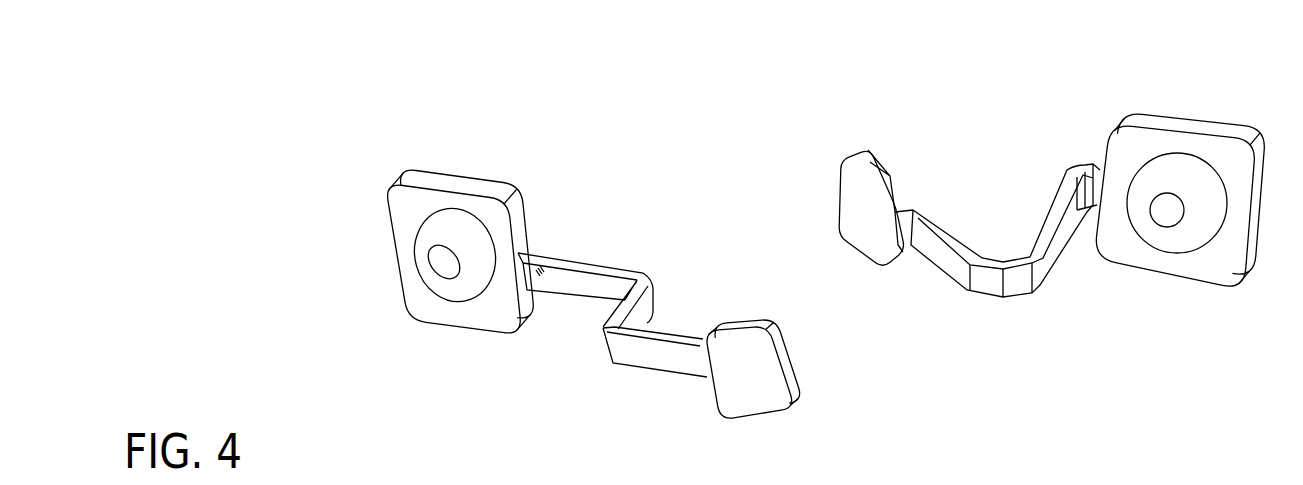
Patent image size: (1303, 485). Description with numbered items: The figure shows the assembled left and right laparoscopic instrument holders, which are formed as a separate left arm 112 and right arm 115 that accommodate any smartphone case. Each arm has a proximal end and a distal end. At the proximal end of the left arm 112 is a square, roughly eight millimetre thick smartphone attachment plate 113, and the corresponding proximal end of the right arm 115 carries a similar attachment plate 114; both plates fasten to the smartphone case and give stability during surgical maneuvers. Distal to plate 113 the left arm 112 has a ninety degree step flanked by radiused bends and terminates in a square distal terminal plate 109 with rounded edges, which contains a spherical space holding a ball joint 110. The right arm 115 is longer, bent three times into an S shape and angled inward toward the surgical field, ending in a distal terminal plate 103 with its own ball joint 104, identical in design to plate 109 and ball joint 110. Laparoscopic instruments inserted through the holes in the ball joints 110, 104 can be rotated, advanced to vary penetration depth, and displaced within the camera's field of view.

The distal terminal plate 103 is at (1182, 304).
The ball joint 104 is at (1193, 143).
The distal terminal plate 109 is at (372, 228).
The ball joint 110 is at (418, 288).
The left instrument holder arm 112 is at (589, 335).
The smartphone attachment plate 113 is at (738, 312).
The smartphone attachment plate 114 is at (842, 131).
The right instrument holder arm 115 is at (1020, 315).